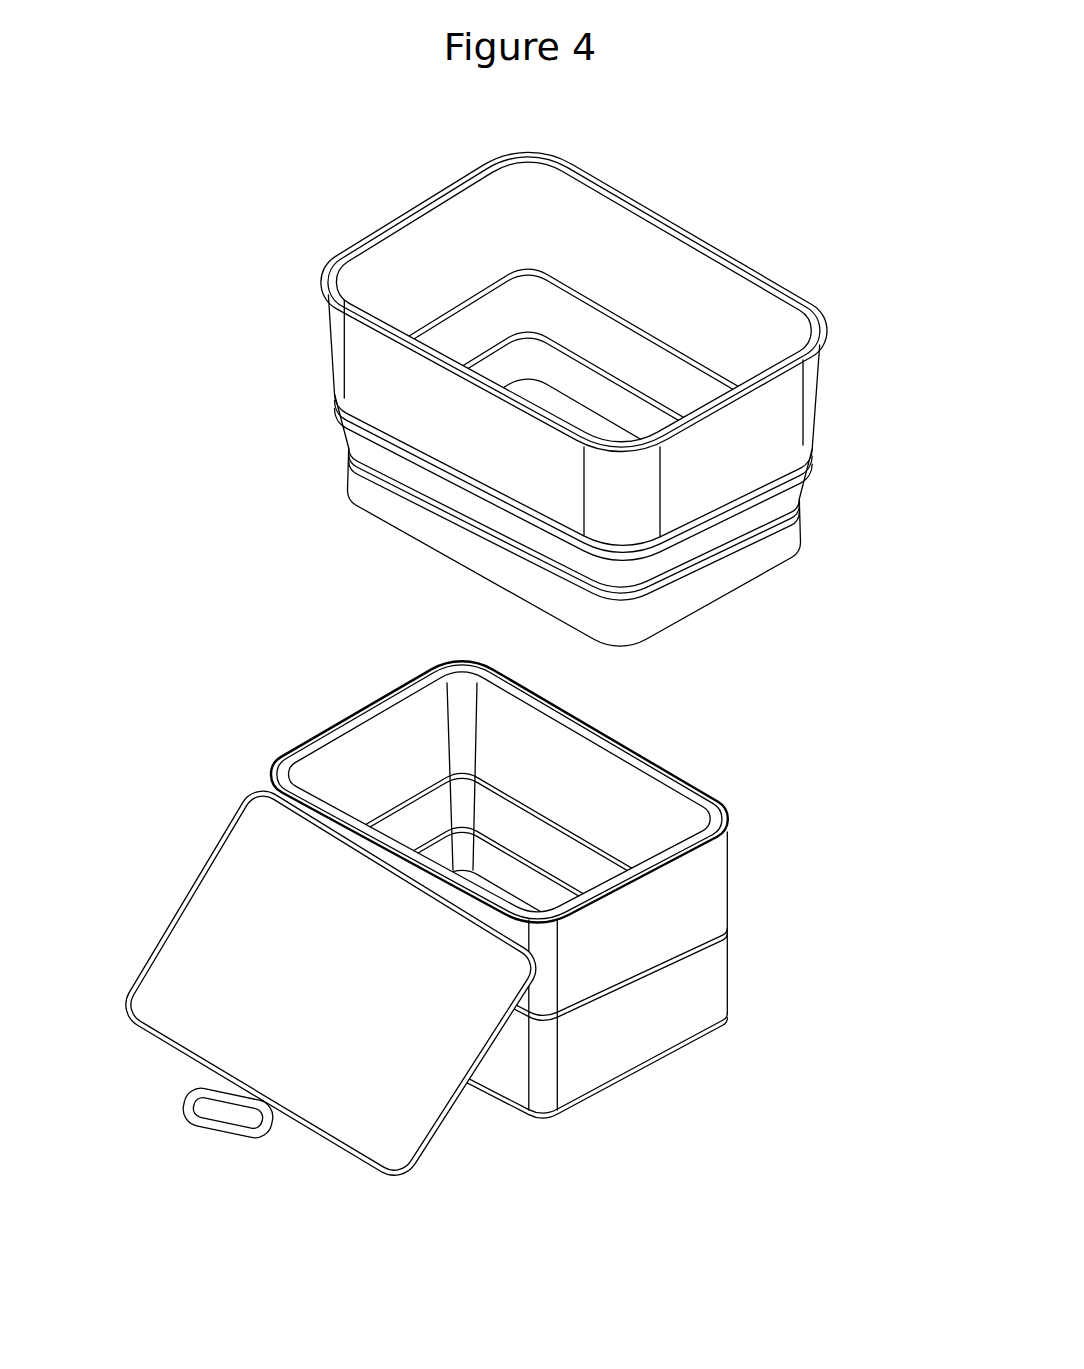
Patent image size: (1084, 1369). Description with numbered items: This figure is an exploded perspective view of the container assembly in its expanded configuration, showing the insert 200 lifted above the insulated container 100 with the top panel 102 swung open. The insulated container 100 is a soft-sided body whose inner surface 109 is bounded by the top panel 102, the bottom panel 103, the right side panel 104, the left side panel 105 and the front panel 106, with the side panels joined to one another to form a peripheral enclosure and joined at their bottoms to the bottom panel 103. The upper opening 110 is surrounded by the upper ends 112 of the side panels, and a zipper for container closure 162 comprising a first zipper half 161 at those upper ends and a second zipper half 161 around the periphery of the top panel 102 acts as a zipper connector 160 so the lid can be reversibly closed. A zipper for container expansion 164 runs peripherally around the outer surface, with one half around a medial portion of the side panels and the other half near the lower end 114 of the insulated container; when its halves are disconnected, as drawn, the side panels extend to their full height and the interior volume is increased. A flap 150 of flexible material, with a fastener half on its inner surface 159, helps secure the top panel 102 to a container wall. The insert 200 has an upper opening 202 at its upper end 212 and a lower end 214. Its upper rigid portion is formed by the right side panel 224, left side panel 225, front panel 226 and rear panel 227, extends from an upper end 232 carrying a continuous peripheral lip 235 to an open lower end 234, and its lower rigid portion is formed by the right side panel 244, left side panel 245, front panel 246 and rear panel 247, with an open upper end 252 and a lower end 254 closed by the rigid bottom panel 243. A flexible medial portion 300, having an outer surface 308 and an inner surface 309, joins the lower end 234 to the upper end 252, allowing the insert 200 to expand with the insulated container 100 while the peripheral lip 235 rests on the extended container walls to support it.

The insulated container 100 is at (683, 1069).
The top panel 102 is at (160, 1010).
The bottom panel 103 is at (480, 888).
The right side panel 104 is at (695, 898).
The left side panel 105 is at (342, 775).
The front panel 106 is at (650, 805).
The inner surface 109 is at (207, 948).
The upper opening 110 is at (489, 707).
The upper ends 112 is at (727, 817).
The base edge of first container 114 is at (728, 1022).
The flap 150 is at (205, 1125).
The inner surface 159 is at (218, 1105).
The zipper connector 160 is at (617, 997).
The zipper half 161 is at (700, 955).
The zipper for container closure 162 is at (348, 715).
The zipper for container expansion 164 is at (660, 970).
The insert 200 is at (358, 222).
The upper opening 202 is at (431, 229).
The upper end 212 is at (833, 332).
The lower end 214 is at (805, 547).
The right side panel 224 is at (780, 408).
The left side panel 225 is at (390, 267).
The front panel 226 is at (636, 236).
The rear panel 227 is at (378, 380).
The upper end 232 is at (826, 316).
The lower end 234 is at (818, 440).
The peripheral lip 235 is at (692, 232).
The bottom panel 243 is at (556, 405).
The right side panel 244 is at (735, 565).
The left side panel 245 is at (500, 363).
The front panel 246 is at (645, 415).
The rear panel 247 is at (433, 520).
The upper end 252 is at (345, 452).
The lower end 254 is at (648, 635).
The flexible medial portion 300 is at (795, 490).
The outer surface 308 is at (355, 428).
The inner surface 309 is at (645, 373).